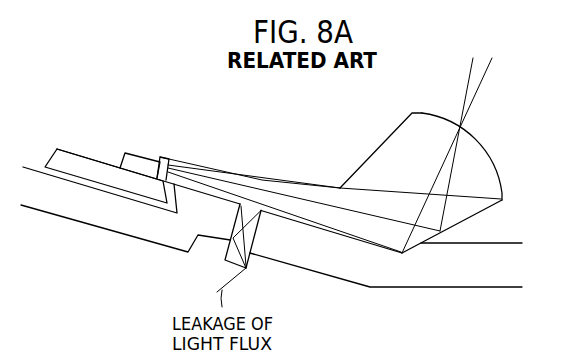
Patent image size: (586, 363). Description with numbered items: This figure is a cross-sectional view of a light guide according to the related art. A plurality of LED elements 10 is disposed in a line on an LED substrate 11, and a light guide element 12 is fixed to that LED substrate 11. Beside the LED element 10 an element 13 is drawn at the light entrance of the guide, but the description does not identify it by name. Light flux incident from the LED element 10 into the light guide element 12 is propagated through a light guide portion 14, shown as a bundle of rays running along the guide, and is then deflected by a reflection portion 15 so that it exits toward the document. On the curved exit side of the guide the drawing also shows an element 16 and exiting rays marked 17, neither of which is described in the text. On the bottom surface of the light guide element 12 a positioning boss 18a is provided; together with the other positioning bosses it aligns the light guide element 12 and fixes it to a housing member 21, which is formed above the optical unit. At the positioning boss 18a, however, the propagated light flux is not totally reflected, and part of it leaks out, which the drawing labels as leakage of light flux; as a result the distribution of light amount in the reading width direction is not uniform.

The LED element 10 is at (128, 153).
The LED substrate 11 is at (75, 154).
The light guide element 12 is at (388, 153).
The light emitting portion 13 is at (160, 157).
The light guide portion 14 is at (288, 193).
The reflection portion 15 is at (473, 216).
The lens surface 16 is at (480, 140).
The exit light 17 is at (470, 73).
The positioning boss 18a is at (223, 263).
The housing member 21 is at (303, 268).